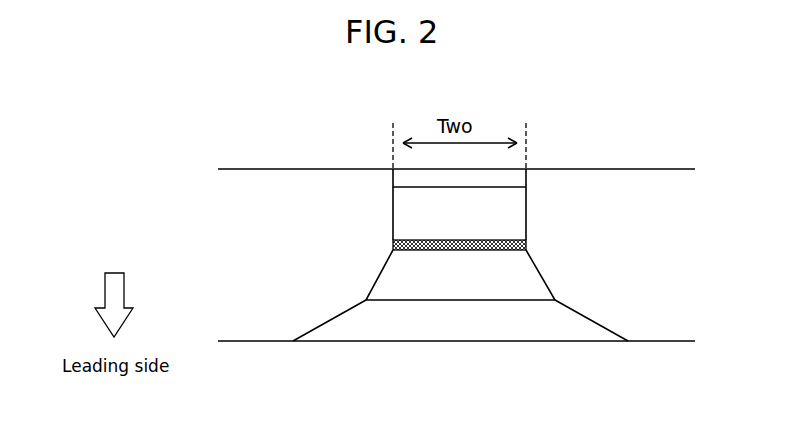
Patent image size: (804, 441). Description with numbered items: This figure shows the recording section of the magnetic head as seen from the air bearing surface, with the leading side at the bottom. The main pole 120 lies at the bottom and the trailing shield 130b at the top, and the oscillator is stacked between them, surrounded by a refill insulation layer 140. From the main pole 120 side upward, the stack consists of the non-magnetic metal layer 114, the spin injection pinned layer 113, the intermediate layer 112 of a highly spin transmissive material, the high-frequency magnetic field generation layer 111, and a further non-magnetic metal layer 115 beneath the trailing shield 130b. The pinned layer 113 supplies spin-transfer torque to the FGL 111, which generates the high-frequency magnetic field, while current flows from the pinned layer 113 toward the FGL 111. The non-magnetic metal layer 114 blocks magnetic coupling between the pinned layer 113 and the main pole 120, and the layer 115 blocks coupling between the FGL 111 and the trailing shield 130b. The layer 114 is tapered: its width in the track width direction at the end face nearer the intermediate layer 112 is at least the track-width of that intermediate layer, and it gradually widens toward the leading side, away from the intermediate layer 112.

The trailing shield 130b is at (456, 147).
The refill insulation layer 140 is at (280, 223).
The main pole 120 is at (456, 371).
The non-magnetic metal layer 115 is at (520, 179).
The high-frequency magnetic field generation layer (FGL) 111 is at (519, 217).
The intermediate layer 112 is at (527, 242).
The spin injection pinned layer 113 is at (535, 280).
The non-magnetic metal layer 114 is at (588, 323).